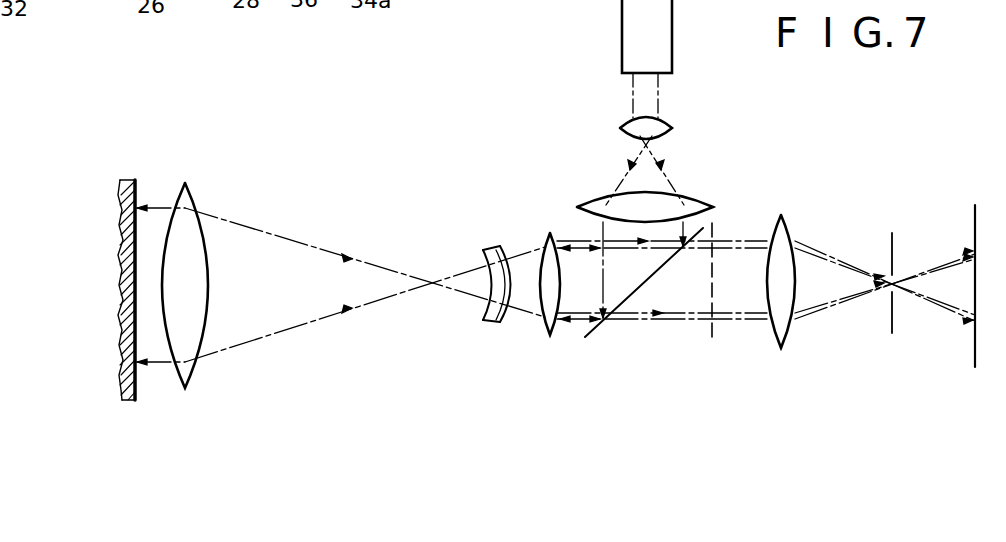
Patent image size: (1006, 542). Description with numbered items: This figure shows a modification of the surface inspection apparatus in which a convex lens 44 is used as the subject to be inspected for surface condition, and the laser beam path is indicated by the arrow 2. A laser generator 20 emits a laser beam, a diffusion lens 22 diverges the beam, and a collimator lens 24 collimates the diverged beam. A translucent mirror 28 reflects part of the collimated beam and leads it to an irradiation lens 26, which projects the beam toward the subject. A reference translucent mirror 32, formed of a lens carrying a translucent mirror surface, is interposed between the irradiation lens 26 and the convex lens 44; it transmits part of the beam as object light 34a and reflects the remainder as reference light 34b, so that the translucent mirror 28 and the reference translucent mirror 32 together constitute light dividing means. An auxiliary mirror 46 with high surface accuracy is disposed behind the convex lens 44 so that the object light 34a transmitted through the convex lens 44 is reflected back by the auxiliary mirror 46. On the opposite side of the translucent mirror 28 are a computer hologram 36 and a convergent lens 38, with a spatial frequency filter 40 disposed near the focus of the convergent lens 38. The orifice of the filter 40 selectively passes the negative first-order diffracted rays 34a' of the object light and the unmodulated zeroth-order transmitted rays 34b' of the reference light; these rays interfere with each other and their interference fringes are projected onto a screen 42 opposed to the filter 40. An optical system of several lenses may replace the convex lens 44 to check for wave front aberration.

The laser beam focus 2 is at (674, 141).
The laser generator 20 is at (674, 30).
The diffusion lens 22 is at (668, 124).
The collimator lens 24 is at (590, 200).
The irradiation lens 26 is at (546, 326).
The translucent mirror 28 is at (598, 330).
The reference translucent mirror 32 is at (491, 322).
The object light 34a is at (341, 283).
The negative first-order diffracted rays 34a' is at (664, 273).
The reference light 34b is at (642, 286).
The unmodulated transmitted rays 34b' is at (885, 282).
The computer hologram 36 is at (710, 340).
The convergent lens 38 is at (786, 222).
The spatial frequency filter 40 is at (895, 326).
The screen 42 is at (973, 216).
The convex lens 44 is at (192, 362).
The auxiliary mirror 46 is at (137, 198).